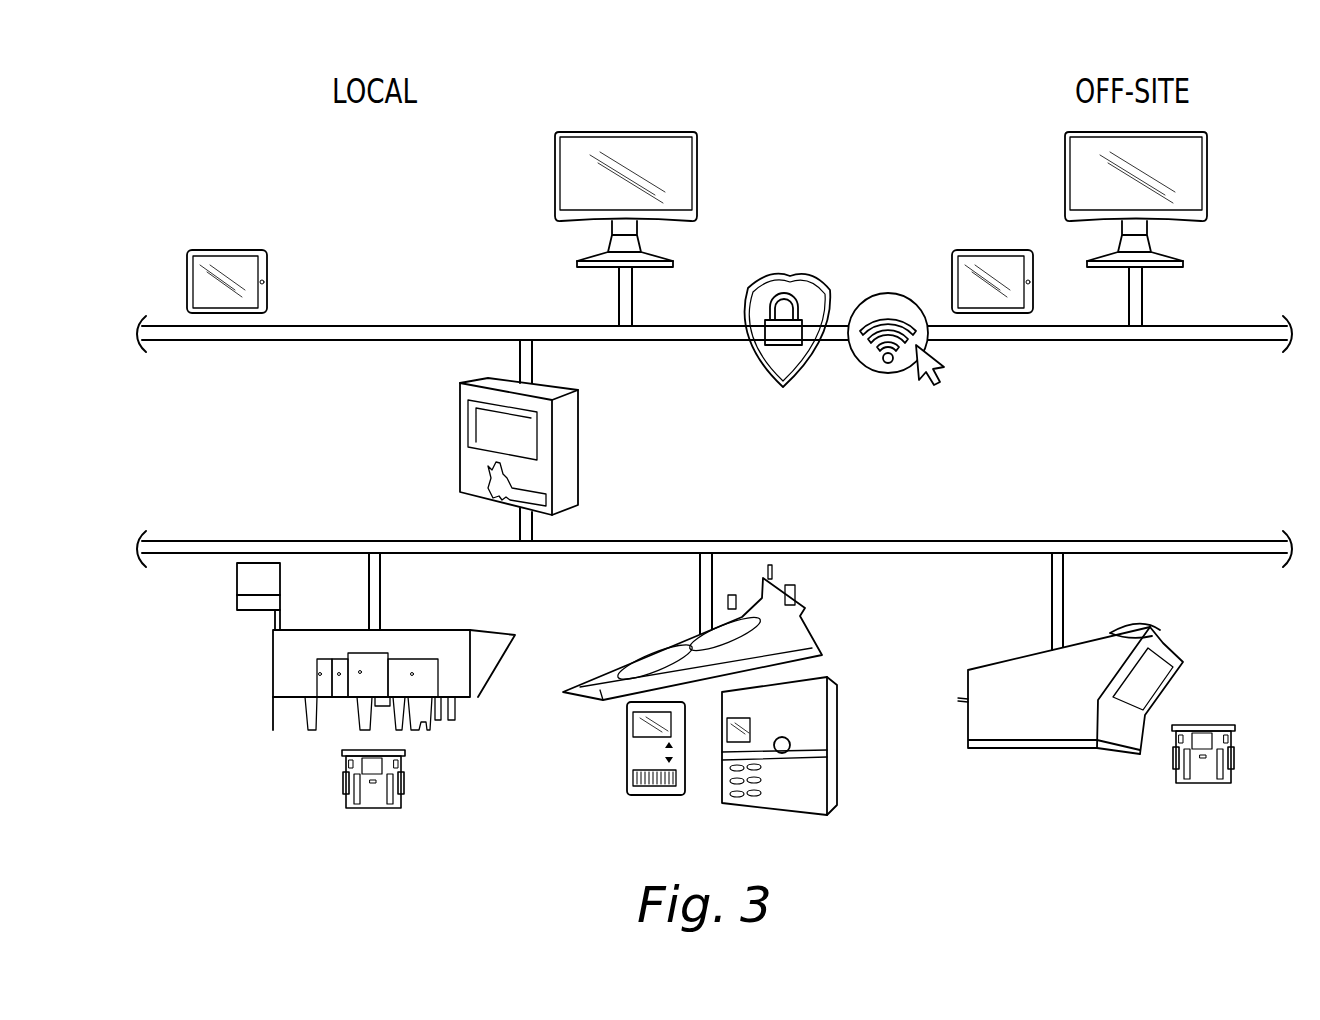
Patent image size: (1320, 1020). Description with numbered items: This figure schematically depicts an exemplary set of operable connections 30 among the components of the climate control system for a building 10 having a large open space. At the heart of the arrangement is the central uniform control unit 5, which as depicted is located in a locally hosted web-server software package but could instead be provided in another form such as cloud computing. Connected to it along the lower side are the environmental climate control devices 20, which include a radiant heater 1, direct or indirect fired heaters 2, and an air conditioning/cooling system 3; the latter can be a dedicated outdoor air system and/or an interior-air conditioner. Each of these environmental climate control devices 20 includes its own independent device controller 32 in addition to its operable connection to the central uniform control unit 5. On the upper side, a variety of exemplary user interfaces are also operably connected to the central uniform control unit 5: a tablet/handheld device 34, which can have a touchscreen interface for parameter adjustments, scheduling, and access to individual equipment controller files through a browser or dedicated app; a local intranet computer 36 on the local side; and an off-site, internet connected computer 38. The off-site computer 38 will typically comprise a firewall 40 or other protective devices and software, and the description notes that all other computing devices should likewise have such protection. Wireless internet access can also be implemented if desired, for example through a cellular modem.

The operable connections 30 is at (858, 101).
The tablet/handheld device 34 is at (278, 248).
The local intranet computer 36 is at (709, 174).
The off-site, internet connected computer 38 is at (1215, 177).
The firewall 40 is at (834, 293).
The central uniform control unit 5 is at (594, 420).
The direct or indirect fired heaters 2 is at (429, 744).
The independent device controller 32 is at (330, 778).
The environmental climate control devices 20 is at (618, 784).
The radiant heater 1 is at (842, 801).
The air conditioning/cooling system 3 is at (1070, 740).
The building 10 is at (1114, 768).